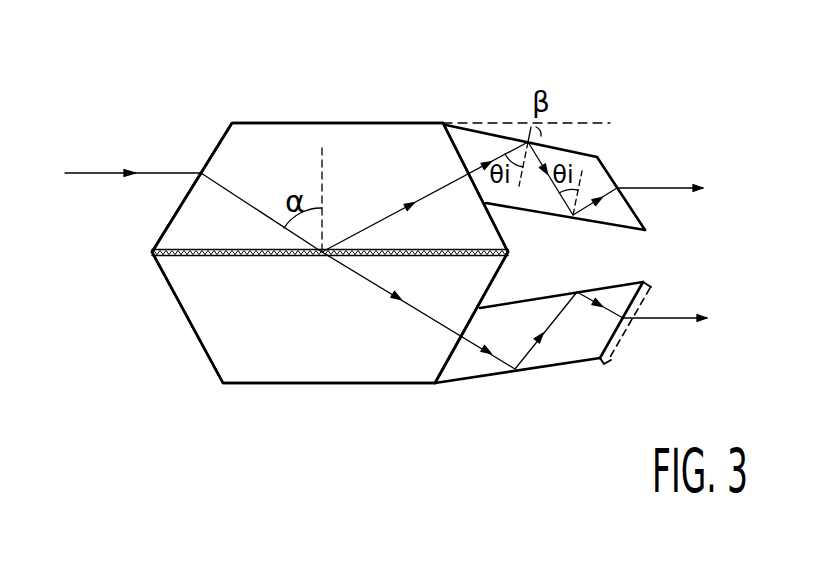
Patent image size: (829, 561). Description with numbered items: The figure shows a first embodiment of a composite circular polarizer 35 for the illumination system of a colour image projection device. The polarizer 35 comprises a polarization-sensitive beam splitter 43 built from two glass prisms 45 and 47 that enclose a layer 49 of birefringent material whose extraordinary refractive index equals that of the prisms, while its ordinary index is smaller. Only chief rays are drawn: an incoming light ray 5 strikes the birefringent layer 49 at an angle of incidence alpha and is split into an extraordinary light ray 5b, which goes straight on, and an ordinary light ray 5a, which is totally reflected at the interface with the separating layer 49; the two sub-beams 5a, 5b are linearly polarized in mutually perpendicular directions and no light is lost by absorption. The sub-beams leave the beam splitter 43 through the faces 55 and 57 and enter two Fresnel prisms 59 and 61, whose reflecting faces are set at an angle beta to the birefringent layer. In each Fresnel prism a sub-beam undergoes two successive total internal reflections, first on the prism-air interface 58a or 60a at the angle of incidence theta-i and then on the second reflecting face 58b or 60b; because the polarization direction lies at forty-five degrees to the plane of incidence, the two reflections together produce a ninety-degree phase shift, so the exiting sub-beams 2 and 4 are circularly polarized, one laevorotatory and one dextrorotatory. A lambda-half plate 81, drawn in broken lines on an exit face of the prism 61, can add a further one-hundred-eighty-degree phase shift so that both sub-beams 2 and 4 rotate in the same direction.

The composite circular polarizer 35 is at (562, 48).
The beam splitter 43 is at (173, 298).
The glass prism 45 is at (245, 148).
The glass prism 47 is at (255, 352).
The layer of birefringent material 49 is at (152, 252).
The upper exit face of beam splitter 55 is at (447, 152).
The lower exit face of beam splitter 57 is at (450, 343).
The incoming light ray 5 is at (86, 171).
The ordinary light ray 5a is at (393, 205).
The extraordinary light ray 5b is at (410, 333).
The first reflecting prism face 58a is at (585, 145).
The reflecting face 58b is at (530, 210).
The Fresnel prism 59 is at (597, 168).
The exiting sub-beam 2 is at (668, 190).
The first reflecting prism face 60a is at (547, 363).
The reflecting face 60b is at (525, 301).
The Fresnel prism 61 is at (587, 337).
The λ/2 plate 81 is at (627, 330).
The exiting sub-beam 4 is at (683, 313).